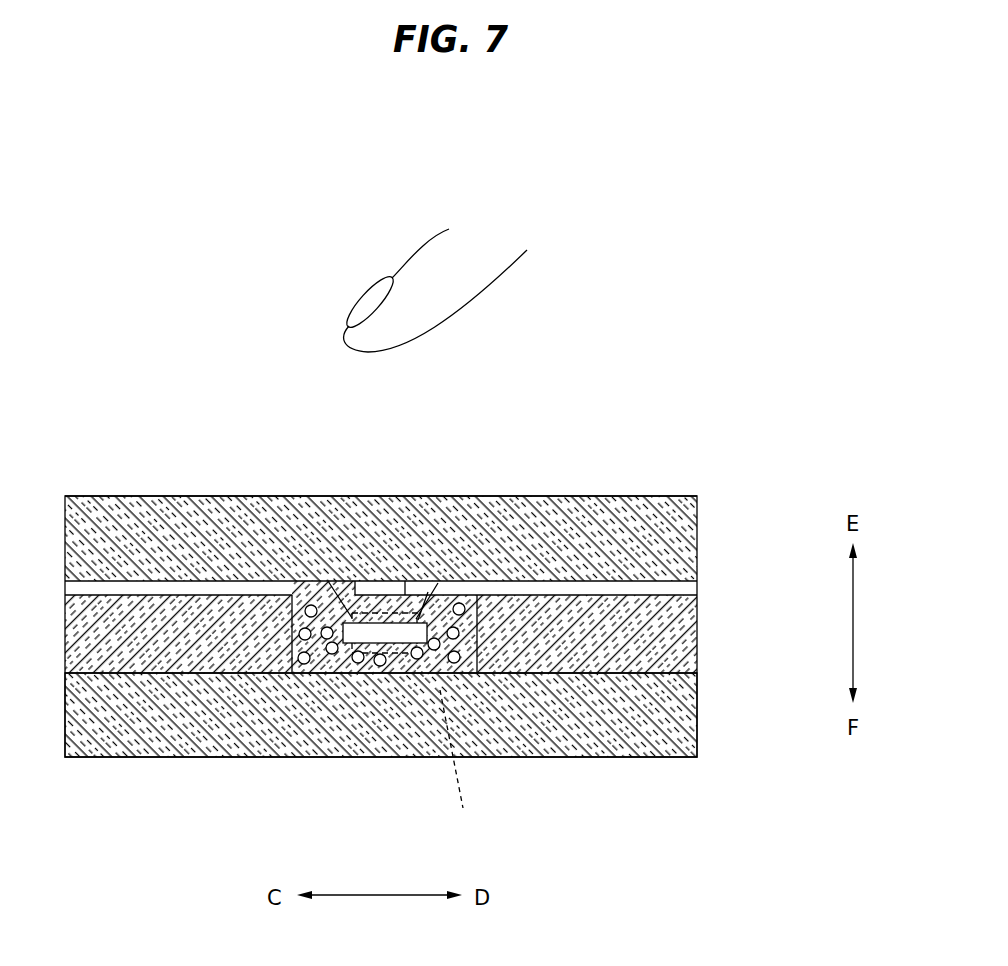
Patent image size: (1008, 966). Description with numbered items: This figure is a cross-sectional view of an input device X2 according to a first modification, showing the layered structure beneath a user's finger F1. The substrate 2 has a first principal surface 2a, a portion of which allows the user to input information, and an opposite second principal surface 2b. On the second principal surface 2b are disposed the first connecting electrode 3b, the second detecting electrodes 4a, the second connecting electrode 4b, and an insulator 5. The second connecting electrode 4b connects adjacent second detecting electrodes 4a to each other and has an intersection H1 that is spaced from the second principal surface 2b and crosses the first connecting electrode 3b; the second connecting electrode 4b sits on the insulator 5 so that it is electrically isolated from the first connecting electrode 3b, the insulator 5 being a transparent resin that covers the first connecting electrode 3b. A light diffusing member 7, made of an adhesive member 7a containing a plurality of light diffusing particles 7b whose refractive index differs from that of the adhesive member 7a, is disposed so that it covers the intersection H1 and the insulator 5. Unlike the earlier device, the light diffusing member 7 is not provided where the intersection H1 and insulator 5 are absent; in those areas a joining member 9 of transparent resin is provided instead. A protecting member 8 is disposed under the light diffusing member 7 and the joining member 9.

The substrate 2 is at (697, 542).
The first principal surface 2a is at (650, 496).
The second principal surface 2b is at (697, 585).
The first connecting electrode 3b is at (385, 586).
The second detecting electrode 4a is at (207, 581).
The second connecting electrode 4b is at (382, 633).
The insulator 5 is at (436, 649).
The light diffusing member 7 is at (348, 743).
The adhesive member 7a is at (332, 648).
The light diffusing particles 7b is at (305, 637).
The protecting member 8 is at (697, 715).
The joining member 9 is at (697, 633).
The finger F1 is at (412, 266).
The intersection H1 is at (462, 766).
The input device X2 is at (709, 329).